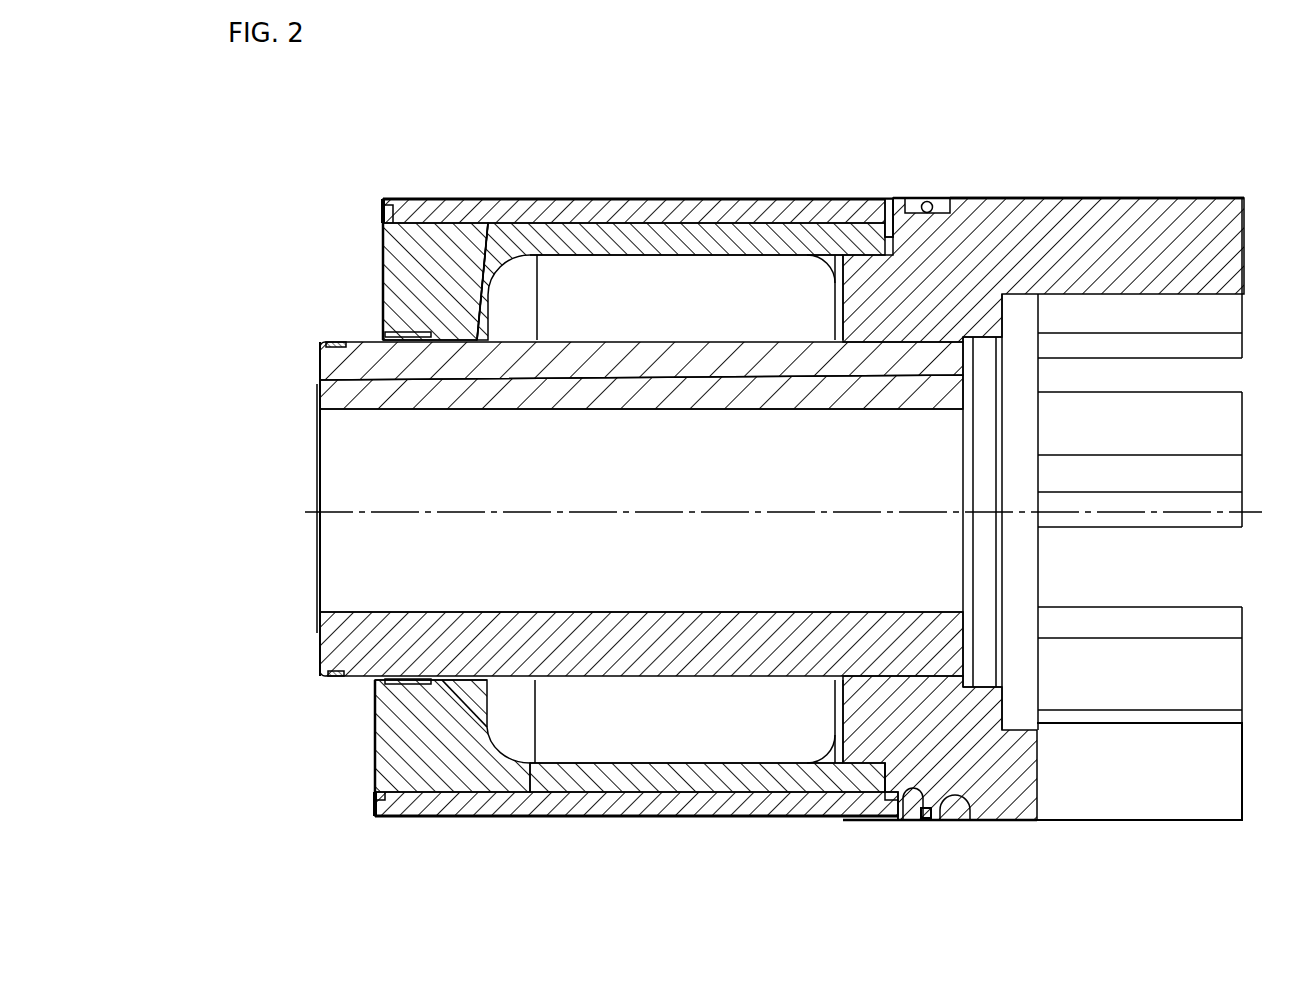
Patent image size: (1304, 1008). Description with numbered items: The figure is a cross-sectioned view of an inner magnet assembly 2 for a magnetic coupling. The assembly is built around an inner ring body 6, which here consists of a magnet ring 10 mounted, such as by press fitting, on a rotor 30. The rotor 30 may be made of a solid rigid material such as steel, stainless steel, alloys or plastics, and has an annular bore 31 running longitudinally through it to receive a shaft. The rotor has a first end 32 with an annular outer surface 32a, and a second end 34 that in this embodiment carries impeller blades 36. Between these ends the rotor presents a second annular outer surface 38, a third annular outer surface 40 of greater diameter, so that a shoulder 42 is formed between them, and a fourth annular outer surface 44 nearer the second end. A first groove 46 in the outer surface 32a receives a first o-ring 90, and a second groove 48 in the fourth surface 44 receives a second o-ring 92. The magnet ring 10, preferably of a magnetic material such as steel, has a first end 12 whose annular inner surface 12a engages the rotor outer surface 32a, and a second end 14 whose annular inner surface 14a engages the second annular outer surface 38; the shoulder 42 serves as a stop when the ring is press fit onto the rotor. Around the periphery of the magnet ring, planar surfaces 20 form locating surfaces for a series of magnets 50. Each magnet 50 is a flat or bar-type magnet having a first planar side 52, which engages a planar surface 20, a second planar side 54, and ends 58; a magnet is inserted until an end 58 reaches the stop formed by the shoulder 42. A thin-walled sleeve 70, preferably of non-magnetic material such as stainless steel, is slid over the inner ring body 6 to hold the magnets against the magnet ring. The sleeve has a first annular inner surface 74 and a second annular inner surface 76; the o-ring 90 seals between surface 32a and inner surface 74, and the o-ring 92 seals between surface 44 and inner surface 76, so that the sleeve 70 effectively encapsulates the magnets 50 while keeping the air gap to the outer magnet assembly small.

The inner magnet assembly 2 is at (236, 372).
The inner ring body 6 is at (993, 196).
The magnet ring 10 is at (412, 258).
The first end 12 is at (380, 290).
The annular inner surface 12a is at (478, 335).
The second end 14 is at (960, 205).
The annular inner surface 14a is at (830, 275).
The planar surfaces 20 is at (730, 245).
The rotor 30 is at (1072, 228).
The annular bore 31 is at (345, 412).
The first end 32 is at (322, 350).
The annular outer surface 32a is at (558, 340).
The second end 34 is at (1236, 200).
The impeller blades 36 is at (1228, 412).
The second annular outer surface 38 is at (930, 240).
The third annular outer surface 40 is at (887, 235).
The shoulder 42 is at (870, 795).
The fourth annular outer surface 44 is at (930, 205).
The first groove 46 is at (385, 335).
The second groove 48 is at (907, 805).
The magnets 50 is at (624, 210).
The first planar side 52 is at (565, 222).
The second planar side 54 is at (468, 200).
The ends 58 is at (378, 218).
The sleeve 70 is at (383, 213).
The first annular inner surface 74 is at (362, 675).
The second annular inner surface 76 is at (957, 820).
The first o-ring 90 is at (336, 342).
The second o-ring 92 is at (925, 820).